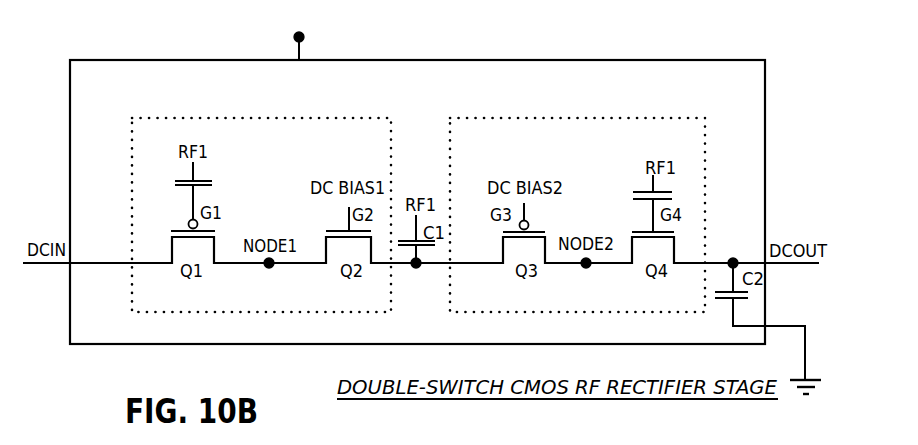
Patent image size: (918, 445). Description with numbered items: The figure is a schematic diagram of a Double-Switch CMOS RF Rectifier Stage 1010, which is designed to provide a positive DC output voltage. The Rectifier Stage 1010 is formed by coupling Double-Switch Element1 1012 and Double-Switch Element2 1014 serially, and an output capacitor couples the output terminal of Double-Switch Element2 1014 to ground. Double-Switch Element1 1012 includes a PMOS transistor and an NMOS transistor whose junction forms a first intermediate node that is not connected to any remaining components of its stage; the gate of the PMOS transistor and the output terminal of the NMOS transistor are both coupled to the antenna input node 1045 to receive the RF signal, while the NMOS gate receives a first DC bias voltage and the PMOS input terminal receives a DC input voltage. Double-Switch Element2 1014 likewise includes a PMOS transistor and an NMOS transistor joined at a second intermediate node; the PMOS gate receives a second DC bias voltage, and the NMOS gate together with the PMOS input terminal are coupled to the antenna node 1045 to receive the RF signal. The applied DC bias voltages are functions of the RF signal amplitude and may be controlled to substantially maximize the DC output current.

The Rectifier Stage 1010 is at (115, 99).
The Double-Switch Element1 1012 is at (178, 141).
The Double-Switch Element2 1014 is at (493, 141).
The antenna input node 1045 is at (304, 35).